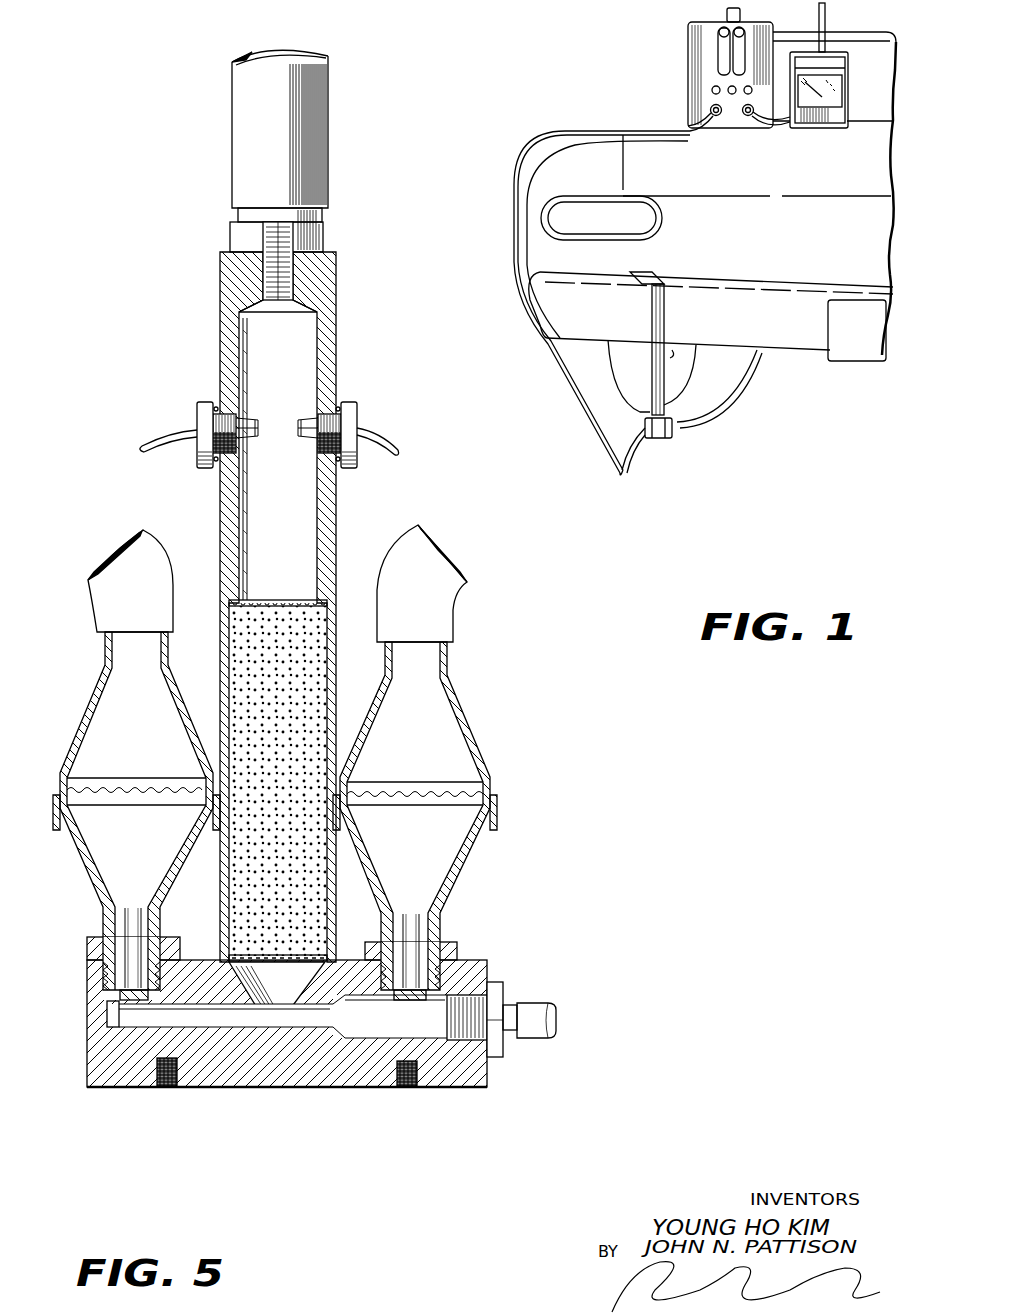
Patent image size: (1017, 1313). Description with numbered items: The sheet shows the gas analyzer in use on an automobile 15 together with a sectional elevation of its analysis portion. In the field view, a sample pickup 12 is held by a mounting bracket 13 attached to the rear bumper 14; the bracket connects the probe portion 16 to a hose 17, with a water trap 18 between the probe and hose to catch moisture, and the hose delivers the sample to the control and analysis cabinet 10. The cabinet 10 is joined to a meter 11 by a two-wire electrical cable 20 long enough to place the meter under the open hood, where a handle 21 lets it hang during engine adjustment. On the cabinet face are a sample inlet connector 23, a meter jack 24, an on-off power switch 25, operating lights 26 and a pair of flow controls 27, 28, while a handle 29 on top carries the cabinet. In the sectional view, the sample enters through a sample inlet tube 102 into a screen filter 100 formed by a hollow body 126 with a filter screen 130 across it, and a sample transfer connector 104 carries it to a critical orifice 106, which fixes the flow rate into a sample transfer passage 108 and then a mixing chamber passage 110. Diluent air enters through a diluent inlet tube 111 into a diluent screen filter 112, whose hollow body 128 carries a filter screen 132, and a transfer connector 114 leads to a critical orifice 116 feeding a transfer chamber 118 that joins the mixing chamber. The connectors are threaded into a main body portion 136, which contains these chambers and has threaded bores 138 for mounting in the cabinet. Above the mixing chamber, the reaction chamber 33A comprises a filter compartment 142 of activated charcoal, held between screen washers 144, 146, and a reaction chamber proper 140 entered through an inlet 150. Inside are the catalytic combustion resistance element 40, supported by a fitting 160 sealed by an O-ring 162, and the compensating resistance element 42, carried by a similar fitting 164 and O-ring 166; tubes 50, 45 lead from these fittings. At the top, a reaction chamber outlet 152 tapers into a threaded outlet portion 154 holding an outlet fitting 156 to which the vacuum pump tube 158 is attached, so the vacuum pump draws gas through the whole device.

In FIG. 1, the control and analysis cabinet 10 is at (688, 80).
In FIG. 1, the meter 11 is at (855, 70).
In FIG. 1, the sample pickup 12 is at (697, 428).
In FIG. 1, the mounting bracket 13 is at (664, 317).
In FIG. 1, the rear bumper 14 is at (558, 293).
In FIG. 1, the automobile 15 is at (570, 168).
In FIG. 1, the probe portion 16 is at (742, 380).
In FIG. 1, the hose 17 is at (548, 367).
In FIG. 1, the water trap 18 is at (660, 440).
In FIG. 1, the two-wire electrical cable 20 is at (793, 128).
In FIG. 1, the handle 21 is at (819, 13).
In FIG. 1, the sample inlet connector 23 is at (708, 126).
In FIG. 1, the meter jack 24 is at (752, 118).
In FIG. 1, the on-off power switch 25 is at (712, 91).
In FIG. 1, the operating lights 26 is at (731, 96).
In FIG. 1, the flow control 27 is at (719, 34).
In FIG. 1, the flow control 28 is at (737, 38).
In FIG. 1, the handle 29 is at (727, 15).
In FIG. 5, the reaction chamber 33A is at (340, 520).
In FIG. 5, the catalytic combustion resistance element 40 is at (296, 413).
In FIG. 5, the compensating resistance element 42 is at (270, 424).
In FIG. 5, the outlet tube 45 is at (400, 450).
In FIG. 5, the inlet tube 50 is at (140, 443).
In FIG. 5, the screen filter 100 is at (78, 697).
In FIG. 5, the sample inlet tube 102 is at (93, 589).
In FIG. 5, the sample transfer connector 104 is at (88, 936).
In FIG. 5, the critical orifice 106 is at (107, 1017).
In FIG. 5, the sample transfer passage 108 is at (170, 1020).
In FIG. 5, the mixing chamber passage 110 is at (276, 1003).
In FIG. 5, the diluent inlet tube 111 is at (463, 599).
In FIG. 5, the diluent screen filter 112 is at (484, 712).
In FIG. 5, the transfer connector 114 is at (463, 953).
In FIG. 5, the critical orifice 116 is at (400, 1007).
In FIG. 5, the transfer chamber 118 is at (357, 1037).
In FIG. 5, the hollow body 126 is at (108, 676).
In FIG. 5, the hollow body 128 is at (483, 758).
In FIG. 5, the filter screen 130 is at (113, 776).
In FIG. 5, the filter screen 132 is at (485, 822).
In FIG. 5, the main body portion 136 is at (482, 1087).
In FIG. 5, the threaded bores 138 is at (167, 1087).
In FIG. 5, the reaction chamber proper 140 is at (258, 329).
In FIG. 5, the filter compartment 142 is at (287, 709).
In FIG. 5, the screen washer 144 is at (263, 1003).
In FIG. 5, the screen washer 146 is at (256, 600).
In FIG. 5, the inlet 150 is at (288, 598).
In FIG. 5, the reaction chamber outlet 152 is at (262, 306).
In FIG. 5, the threaded outlet portion 154 is at (263, 270).
In FIG. 5, the outlet fitting 156 is at (234, 224).
In FIG. 5, the vacuum pump tube 158 is at (232, 76).
In FIG. 5, the fitting 160 is at (360, 423).
In FIG. 5, the O-ring 162 is at (338, 463).
In FIG. 5, the fitting 164 is at (213, 421).
In FIG. 5, the O-ring 166 is at (216, 464).